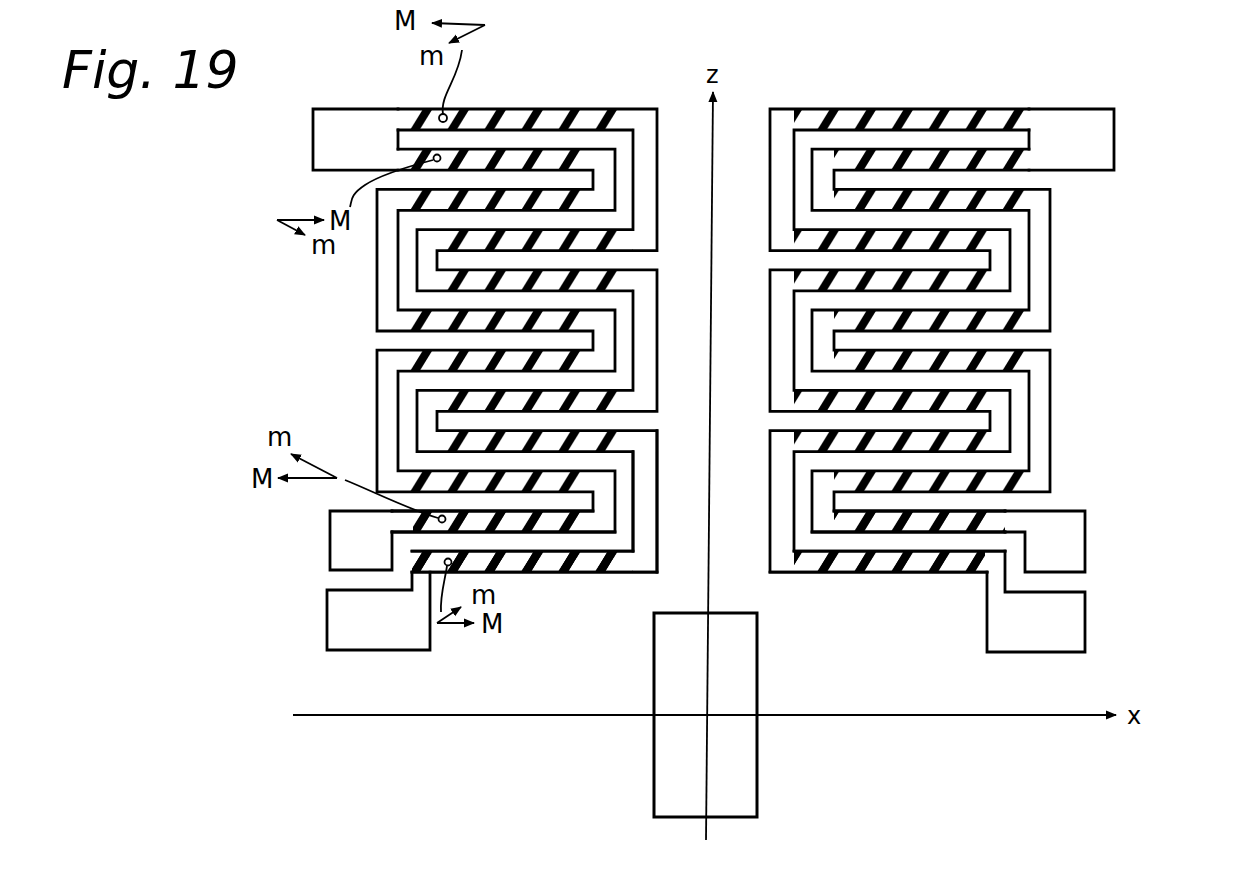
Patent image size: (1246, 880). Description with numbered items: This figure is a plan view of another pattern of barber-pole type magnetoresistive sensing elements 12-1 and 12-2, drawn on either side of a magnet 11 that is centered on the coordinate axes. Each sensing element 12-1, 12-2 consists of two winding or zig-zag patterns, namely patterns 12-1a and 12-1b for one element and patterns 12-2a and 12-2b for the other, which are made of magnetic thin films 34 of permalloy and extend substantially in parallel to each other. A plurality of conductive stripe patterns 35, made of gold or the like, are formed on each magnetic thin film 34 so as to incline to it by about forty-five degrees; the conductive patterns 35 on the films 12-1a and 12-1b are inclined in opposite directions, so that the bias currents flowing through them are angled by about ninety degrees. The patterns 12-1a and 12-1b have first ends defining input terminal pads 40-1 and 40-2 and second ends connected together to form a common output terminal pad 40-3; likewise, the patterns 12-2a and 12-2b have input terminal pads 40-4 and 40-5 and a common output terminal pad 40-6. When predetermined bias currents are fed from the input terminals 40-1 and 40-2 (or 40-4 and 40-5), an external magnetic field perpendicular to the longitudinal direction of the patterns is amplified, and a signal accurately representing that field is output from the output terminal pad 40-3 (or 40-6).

The magnet 11 is at (748, 776).
The barber-pole type magnetoresistive sensing element 12-1 is at (510, 96).
The winding or zig-zag pattern 12-1a is at (557, 573).
The winding or zig-zag pattern 12-1b is at (535, 524).
The barber-pole type magnetoresistive sensing element 12-2 is at (917, 102).
The winding or zig-zag pattern 12-2a is at (955, 573).
The winding or zig-zag pattern 12-2b is at (943, 524).
The magnetic thin film 34 is at (627, 573).
The conductive stripe pattern 35 is at (578, 573).
The input terminal pad 40-1 is at (327, 631).
The input terminal pad 40-2 is at (330, 545).
The common output terminal pad 40-3 is at (311, 150).
The input terminal pad 40-4 is at (1085, 629).
The input terminal pad 40-5 is at (1085, 547).
The common output terminal pad 40-6 is at (1108, 146).